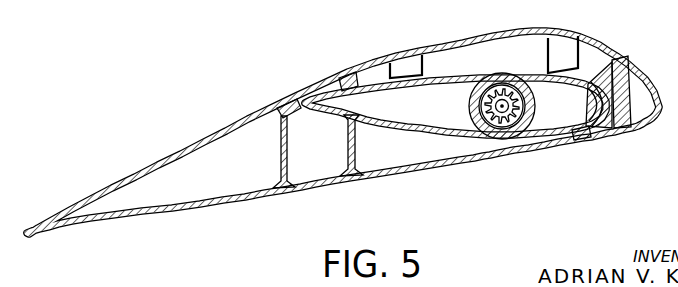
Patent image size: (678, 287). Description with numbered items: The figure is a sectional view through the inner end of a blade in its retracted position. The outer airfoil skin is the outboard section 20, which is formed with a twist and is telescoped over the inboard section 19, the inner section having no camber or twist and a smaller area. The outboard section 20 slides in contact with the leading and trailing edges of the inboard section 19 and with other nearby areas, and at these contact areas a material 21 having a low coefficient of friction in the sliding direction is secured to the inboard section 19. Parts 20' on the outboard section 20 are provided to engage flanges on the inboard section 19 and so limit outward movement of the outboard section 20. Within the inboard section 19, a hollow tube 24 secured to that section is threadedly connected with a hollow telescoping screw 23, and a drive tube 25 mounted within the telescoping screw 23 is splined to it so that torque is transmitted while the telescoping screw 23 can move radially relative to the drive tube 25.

The inboard section 19 is at (395, 131).
The outboard section 20 is at (343, 140).
The parts 20' is at (484, 57).
The material 21 is at (288, 98).
The telescoping screw 23 is at (526, 107).
The hollow tube 24 is at (471, 98).
The drive tube 25 is at (503, 112).